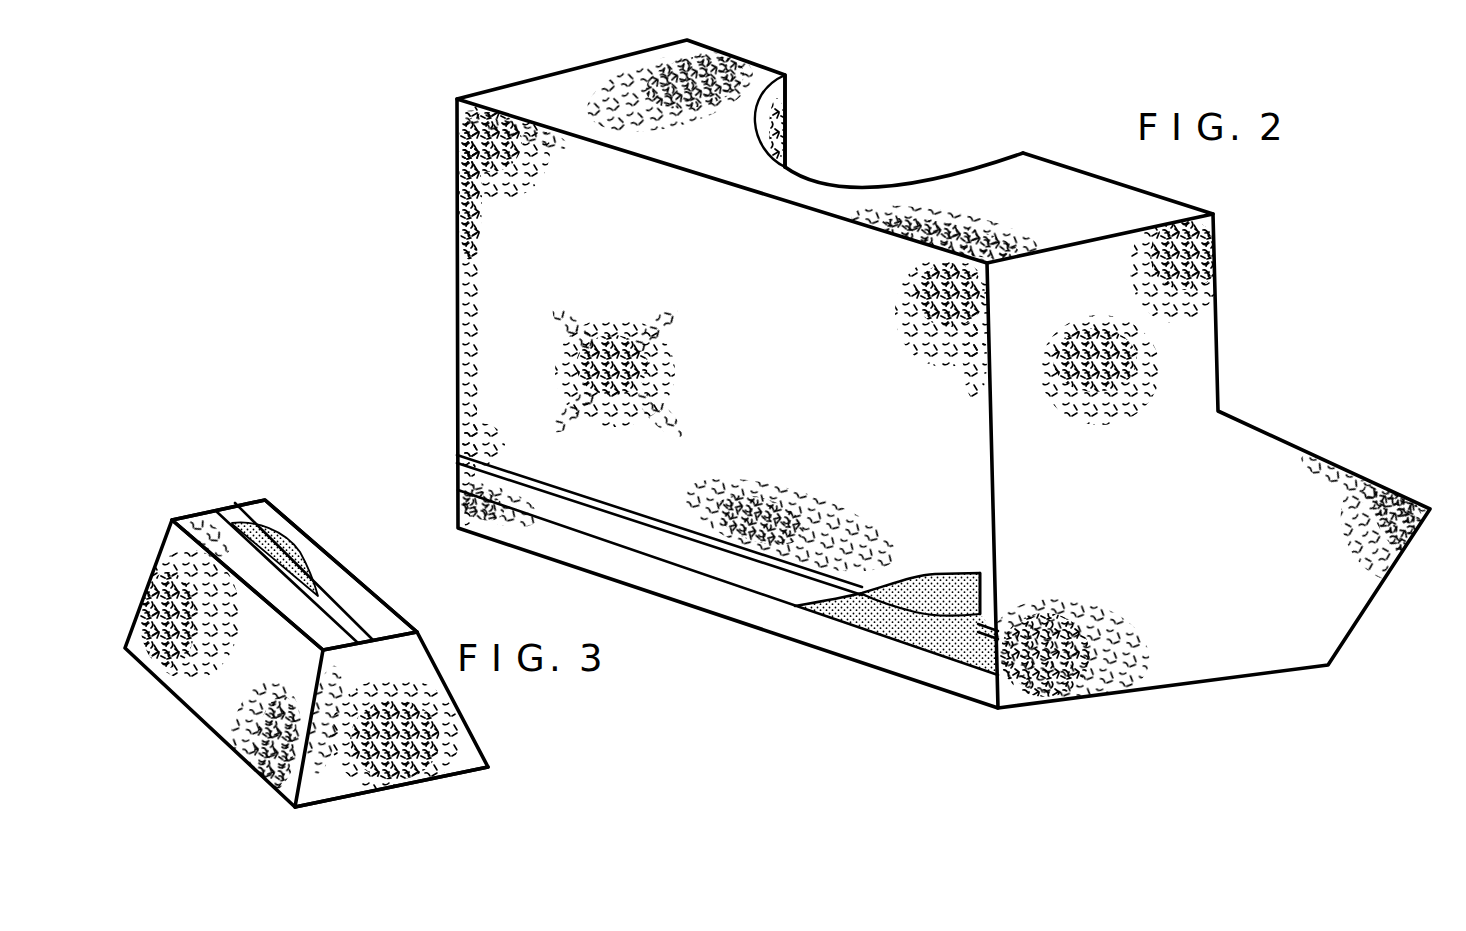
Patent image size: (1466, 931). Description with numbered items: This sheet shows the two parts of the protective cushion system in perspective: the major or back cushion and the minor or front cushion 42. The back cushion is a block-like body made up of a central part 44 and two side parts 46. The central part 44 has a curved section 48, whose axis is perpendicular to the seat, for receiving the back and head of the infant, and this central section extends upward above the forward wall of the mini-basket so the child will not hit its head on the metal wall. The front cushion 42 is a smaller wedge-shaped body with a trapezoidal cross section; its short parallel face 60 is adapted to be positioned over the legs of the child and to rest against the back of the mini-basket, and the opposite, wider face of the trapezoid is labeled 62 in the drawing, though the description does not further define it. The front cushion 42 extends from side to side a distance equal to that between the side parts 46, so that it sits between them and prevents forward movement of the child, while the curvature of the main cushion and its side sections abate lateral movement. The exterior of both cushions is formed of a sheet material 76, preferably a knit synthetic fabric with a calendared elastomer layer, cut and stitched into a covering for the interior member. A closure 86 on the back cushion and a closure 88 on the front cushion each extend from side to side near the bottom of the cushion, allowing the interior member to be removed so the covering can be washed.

In FIG. 3, the front cushion 42 is at (143, 598).
In FIG. 2, the central part 44 is at (782, 187).
In FIG. 2, the side parts 46 is at (1314, 456).
In FIG. 2, the curved section 48 is at (927, 183).
In FIG. 3, the short parallel face 60 is at (203, 517).
In FIG. 3, the bottom surface 62 is at (410, 783).
In FIG. 2, the sheet material 76 is at (952, 683).
In FIG. 2, the closure 86 is at (987, 665).
In FIG. 3, the closure 86 is at (323, 585).
In FIG. 2, the closure 88 is at (913, 607).
In FIG. 3, the closure 88 is at (275, 523).